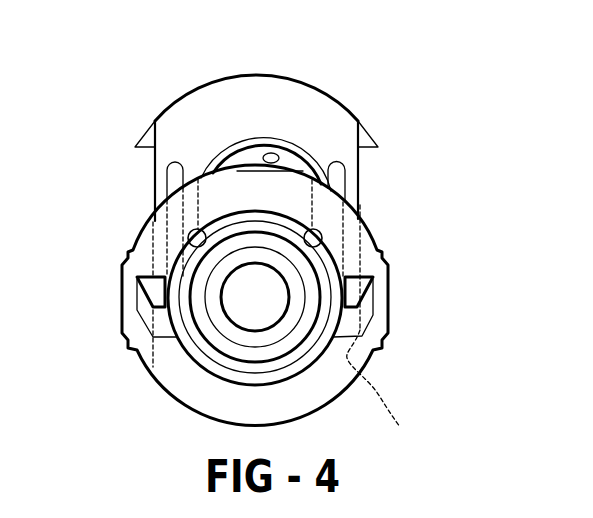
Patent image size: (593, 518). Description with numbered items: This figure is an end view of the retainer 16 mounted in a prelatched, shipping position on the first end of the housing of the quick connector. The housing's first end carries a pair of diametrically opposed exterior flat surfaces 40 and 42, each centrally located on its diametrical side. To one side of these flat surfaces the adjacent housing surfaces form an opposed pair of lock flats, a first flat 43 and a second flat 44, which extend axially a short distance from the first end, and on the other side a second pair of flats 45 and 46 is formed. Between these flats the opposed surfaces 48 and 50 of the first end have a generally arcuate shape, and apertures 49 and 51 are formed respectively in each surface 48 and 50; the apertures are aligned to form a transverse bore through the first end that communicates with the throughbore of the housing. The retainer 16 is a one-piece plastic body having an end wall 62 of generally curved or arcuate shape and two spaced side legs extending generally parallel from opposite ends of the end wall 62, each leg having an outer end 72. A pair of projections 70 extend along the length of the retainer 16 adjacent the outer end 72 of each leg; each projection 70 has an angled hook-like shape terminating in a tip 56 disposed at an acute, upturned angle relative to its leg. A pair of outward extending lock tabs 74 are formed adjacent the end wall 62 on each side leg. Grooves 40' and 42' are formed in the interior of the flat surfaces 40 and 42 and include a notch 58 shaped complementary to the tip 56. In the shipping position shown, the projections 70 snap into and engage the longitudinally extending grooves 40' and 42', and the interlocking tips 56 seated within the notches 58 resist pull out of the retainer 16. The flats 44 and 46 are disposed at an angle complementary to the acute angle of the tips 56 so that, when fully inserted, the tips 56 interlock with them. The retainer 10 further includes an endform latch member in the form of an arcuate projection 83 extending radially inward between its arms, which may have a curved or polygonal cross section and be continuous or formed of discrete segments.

The retainer 10 is at (413, 121).
The retainer 16 is at (70, 198).
The exterior flat surface 40 is at (246, 397).
The groove 40' is at (412, 311).
The exterior flat surface 42 is at (100, 292).
The groove 42' is at (111, 307).
The first flat 43 is at (380, 357).
The second flat 44 is at (140, 350).
The flat 45 is at (128, 250).
The flat 46 is at (360, 226).
The arcuate surface 48 is at (240, 171).
The aperture 49 is at (358, 207).
The arcuate surface 50 is at (175, 396).
The aperture 51 is at (378, 393).
The tip 56 is at (122, 262).
The notch 58 is at (0, 470).
The end wall 62 is at (307, 85).
The projection 70 is at (90, 0).
The outer end 72 is at (43, 0).
The lock tab 74 is at (144, 136).
The arcuate projection 83 is at (263, 153).